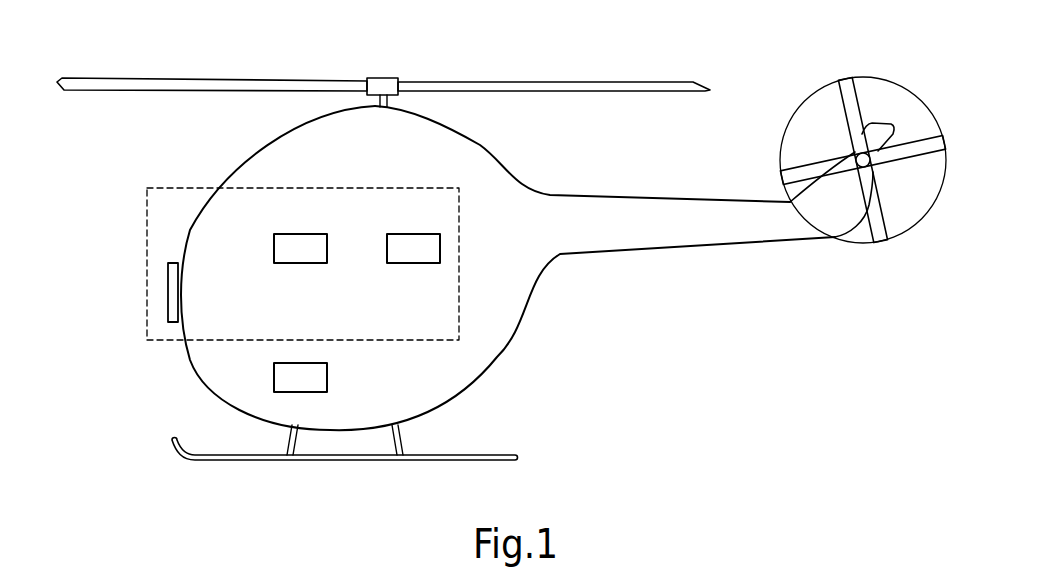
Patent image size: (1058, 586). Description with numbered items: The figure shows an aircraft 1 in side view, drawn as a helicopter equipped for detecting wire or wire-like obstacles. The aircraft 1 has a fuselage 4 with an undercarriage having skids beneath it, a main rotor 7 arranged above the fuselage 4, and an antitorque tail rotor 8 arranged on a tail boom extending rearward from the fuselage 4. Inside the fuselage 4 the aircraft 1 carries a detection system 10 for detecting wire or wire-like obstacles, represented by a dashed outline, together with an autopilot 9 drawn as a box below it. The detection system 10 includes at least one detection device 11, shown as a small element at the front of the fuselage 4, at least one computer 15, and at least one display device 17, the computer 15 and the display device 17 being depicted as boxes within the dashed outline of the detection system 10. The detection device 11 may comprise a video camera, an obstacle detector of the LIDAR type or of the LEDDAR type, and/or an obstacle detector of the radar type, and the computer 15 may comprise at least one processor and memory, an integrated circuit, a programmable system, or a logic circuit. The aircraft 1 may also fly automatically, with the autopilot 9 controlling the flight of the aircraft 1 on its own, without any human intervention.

The aircraft 1 is at (509, 246).
The fuselage 4 is at (523, 310).
The main rotor 7 is at (532, 82).
The antitorque tail rotor 8 is at (872, 96).
The autopilot 9 is at (327, 375).
The detection system 10 is at (375, 342).
The detection device 11 is at (172, 263).
The computer 15 is at (440, 250).
The display device 17 is at (327, 248).